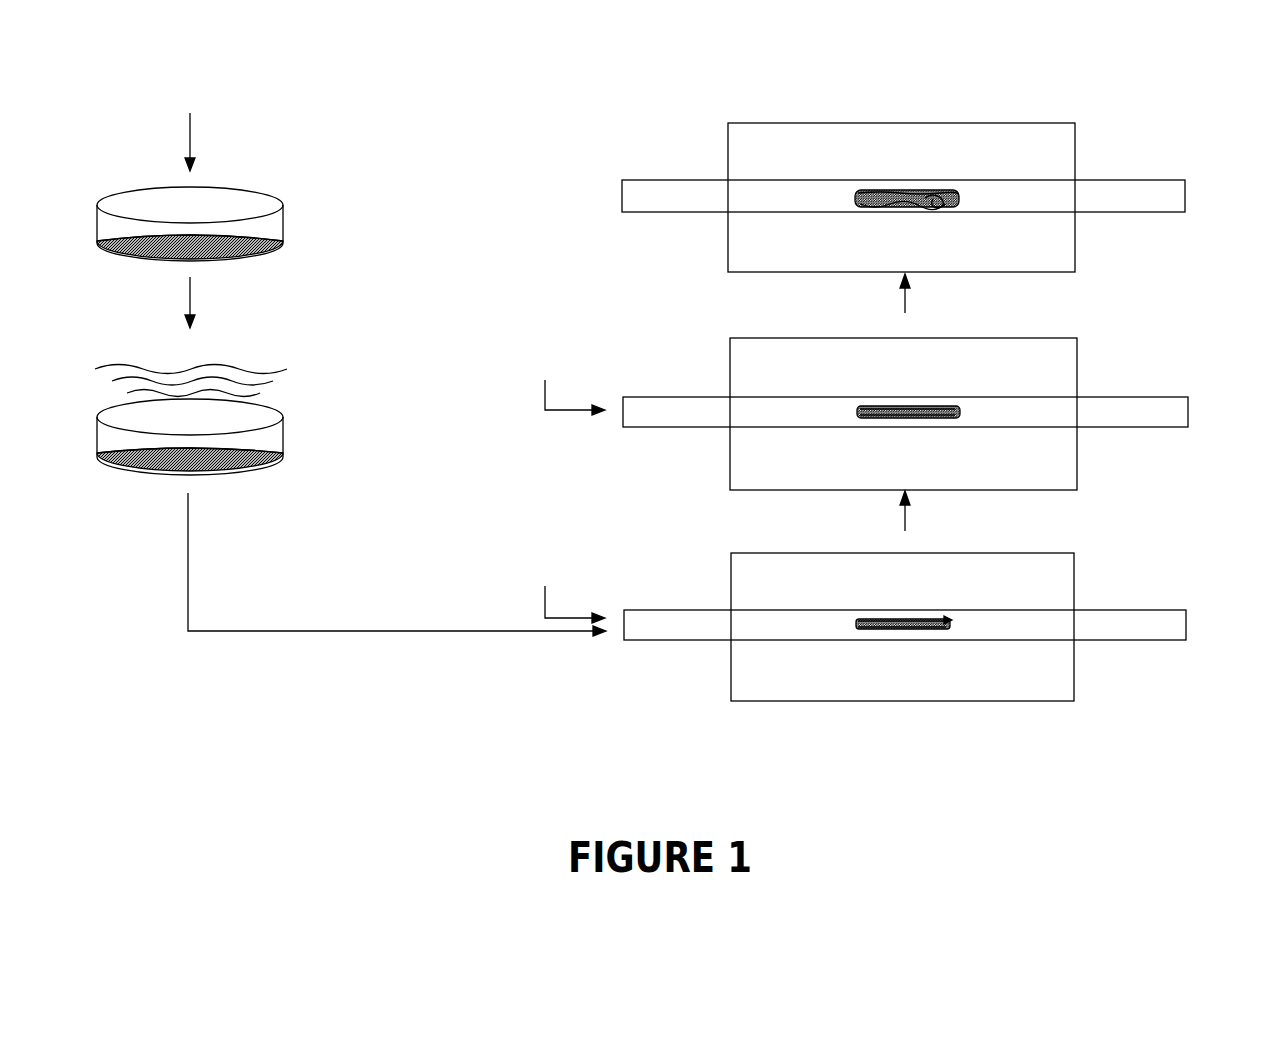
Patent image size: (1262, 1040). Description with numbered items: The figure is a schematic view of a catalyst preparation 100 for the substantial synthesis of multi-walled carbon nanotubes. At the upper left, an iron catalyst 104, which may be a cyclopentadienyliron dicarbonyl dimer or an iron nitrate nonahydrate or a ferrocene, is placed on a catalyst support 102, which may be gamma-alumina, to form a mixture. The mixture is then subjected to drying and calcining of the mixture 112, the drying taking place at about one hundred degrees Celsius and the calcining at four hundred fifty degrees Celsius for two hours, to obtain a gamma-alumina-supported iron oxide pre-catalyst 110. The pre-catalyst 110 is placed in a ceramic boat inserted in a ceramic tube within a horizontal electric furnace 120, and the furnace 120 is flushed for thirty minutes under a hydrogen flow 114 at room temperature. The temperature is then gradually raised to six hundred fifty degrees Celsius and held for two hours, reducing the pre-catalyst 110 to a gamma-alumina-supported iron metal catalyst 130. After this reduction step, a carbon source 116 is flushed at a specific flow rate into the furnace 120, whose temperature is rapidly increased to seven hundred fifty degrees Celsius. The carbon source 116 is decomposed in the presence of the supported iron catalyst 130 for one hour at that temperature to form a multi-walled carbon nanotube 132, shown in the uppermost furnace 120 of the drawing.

The catalyst preparation 100 is at (667, 441).
The catalyst support 102 is at (268, 251).
The iron catalyst 104 is at (189, 109).
The γ-Al2O3-supported iron oxide pre-catalyst 110 is at (899, 712).
The drying and calcining mixture 112 is at (287, 388).
The hydrogen flow 114 is at (551, 585).
The carbon source 116 is at (548, 377).
The furnace 120 is at (1037, 132).
The γ-Al2O3-supported iron metal catalyst 130 is at (927, 403).
The multi-walled carbon nanotube 132 is at (913, 192).